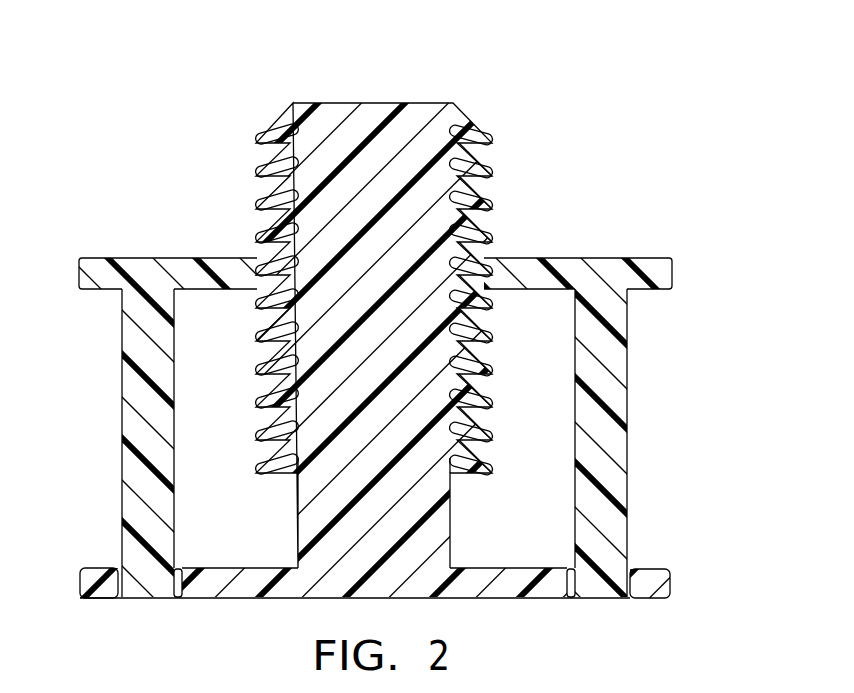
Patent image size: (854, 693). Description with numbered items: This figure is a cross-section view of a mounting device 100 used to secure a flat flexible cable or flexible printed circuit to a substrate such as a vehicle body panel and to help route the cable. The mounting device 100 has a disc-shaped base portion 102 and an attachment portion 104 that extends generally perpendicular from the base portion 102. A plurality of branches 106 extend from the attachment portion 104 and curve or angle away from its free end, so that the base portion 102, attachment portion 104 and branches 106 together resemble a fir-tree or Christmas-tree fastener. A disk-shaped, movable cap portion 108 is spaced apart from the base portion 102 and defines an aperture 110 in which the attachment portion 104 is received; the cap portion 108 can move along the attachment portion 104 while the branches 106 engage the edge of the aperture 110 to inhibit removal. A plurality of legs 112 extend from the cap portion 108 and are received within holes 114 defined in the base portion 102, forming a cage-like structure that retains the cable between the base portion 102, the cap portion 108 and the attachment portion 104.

The mounting device 100 is at (224, 82).
The base portion 102 is at (648, 582).
The attachment portion 104 is at (445, 520).
The plurality of branches 106 is at (262, 204).
The cap portion 108 is at (658, 262).
The aperture 110 is at (483, 272).
The plurality of legs 112 is at (125, 412).
The holes 114 is at (118, 598).